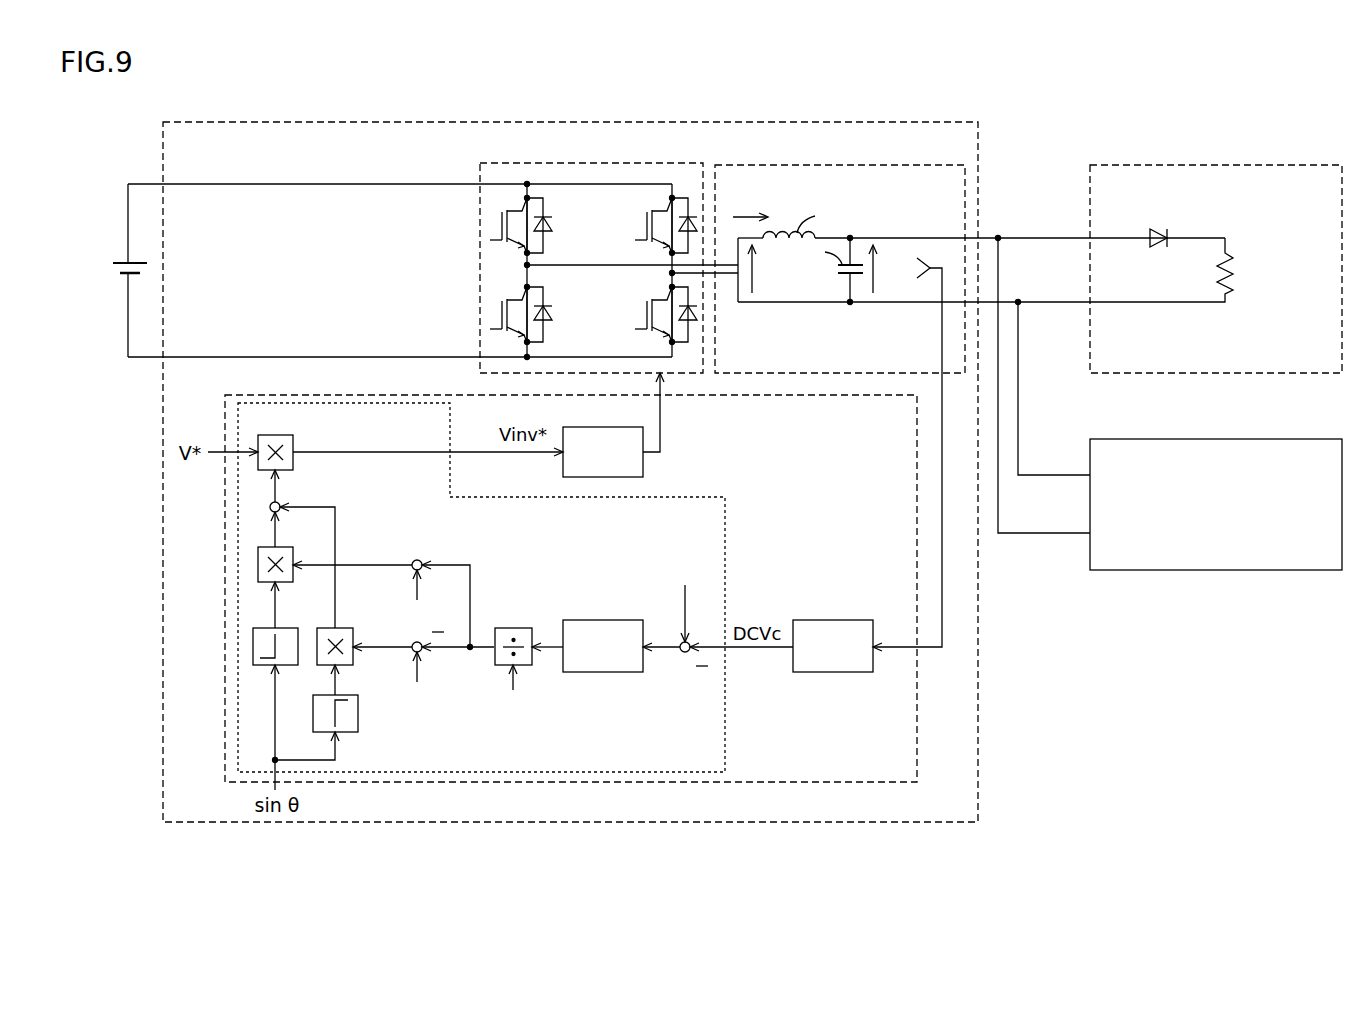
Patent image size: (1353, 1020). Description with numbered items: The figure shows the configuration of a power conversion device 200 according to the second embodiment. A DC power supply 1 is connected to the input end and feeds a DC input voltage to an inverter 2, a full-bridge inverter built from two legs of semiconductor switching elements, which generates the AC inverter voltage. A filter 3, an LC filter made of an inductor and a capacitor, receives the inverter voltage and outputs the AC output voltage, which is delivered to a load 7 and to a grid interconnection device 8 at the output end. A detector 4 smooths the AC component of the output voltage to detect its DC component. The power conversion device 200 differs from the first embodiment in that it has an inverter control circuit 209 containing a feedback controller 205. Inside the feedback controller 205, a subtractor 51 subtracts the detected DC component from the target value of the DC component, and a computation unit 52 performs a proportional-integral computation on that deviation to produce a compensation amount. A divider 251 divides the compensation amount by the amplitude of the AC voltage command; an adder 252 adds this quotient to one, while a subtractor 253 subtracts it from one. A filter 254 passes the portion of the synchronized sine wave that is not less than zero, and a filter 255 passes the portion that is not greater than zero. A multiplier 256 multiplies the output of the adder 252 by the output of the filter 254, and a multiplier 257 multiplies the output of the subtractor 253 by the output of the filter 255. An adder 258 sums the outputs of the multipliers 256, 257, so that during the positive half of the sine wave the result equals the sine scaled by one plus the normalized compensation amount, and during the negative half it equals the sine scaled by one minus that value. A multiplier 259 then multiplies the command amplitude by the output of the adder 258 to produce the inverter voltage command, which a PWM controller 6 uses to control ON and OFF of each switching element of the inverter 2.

The power conversion device 200 is at (222, 121).
The DC power supply 1 is at (121, 262).
The inverter 2 is at (508, 163).
The filter 3 is at (743, 165).
The load 7 is at (1121, 165).
The grid interconnection device 8 is at (1128, 438).
The inverter control circuit 209 is at (226, 394).
The feedback controller 205 is at (726, 759).
The multiplier 259 is at (277, 434).
The adder 258 is at (269, 507).
The multiplier 256 is at (257, 565).
The filter 254 is at (252, 647).
The multiplier 257 is at (352, 627).
The filter 255 is at (359, 722).
The adder 252 is at (417, 560).
The subtractor 253 is at (413, 652).
The divider 251 is at (505, 627).
The computation unit 52 is at (600, 620).
The subtractor 51 is at (684, 653).
The detector 4 is at (826, 620).
The PWM controller 6 is at (606, 427).